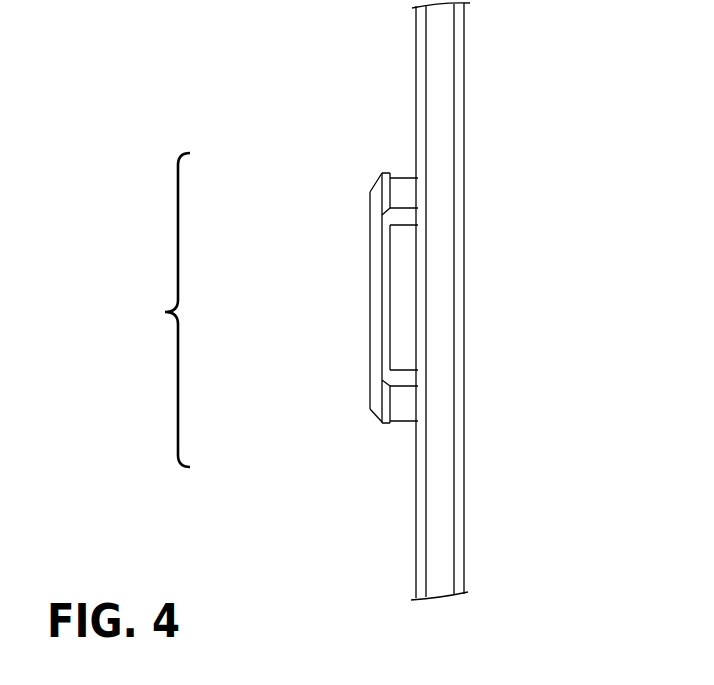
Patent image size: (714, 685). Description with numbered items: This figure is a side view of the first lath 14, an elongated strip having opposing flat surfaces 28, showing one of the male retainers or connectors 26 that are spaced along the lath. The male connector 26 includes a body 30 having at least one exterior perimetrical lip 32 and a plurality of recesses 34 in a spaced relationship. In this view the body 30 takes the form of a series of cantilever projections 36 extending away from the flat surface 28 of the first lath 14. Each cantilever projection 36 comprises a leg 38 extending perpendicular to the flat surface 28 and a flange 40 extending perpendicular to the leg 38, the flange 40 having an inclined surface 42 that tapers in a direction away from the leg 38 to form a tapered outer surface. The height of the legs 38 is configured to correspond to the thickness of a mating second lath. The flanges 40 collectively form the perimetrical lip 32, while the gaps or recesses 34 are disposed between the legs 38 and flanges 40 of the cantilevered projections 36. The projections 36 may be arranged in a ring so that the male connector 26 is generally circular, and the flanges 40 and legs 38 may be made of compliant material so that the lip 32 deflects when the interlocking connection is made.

The first lath 14 is at (477, 301).
The male connector 26 is at (359, 310).
The flat surface 28 is at (416, 60).
The body 30 is at (360, 273).
The perimetrical lip 32 is at (370, 433).
The recess 34 is at (378, 213).
The cantilever projection 36 is at (398, 160).
The leg 38 is at (405, 192).
The flange 40 is at (382, 173).
The inclined surface 42 is at (369, 190).